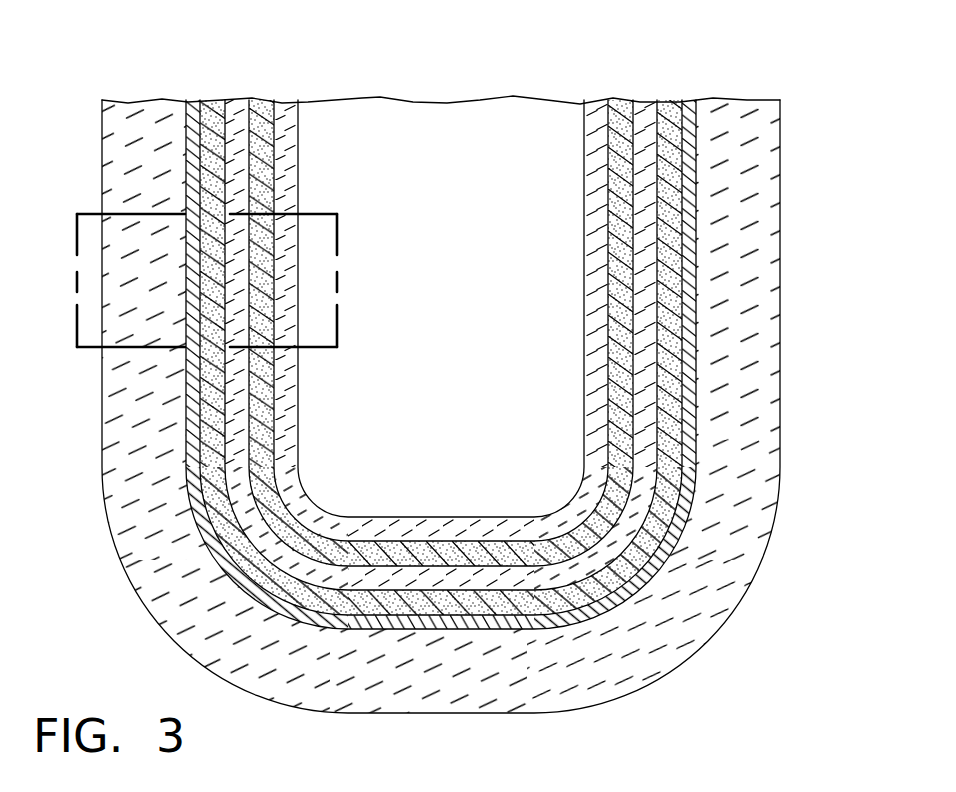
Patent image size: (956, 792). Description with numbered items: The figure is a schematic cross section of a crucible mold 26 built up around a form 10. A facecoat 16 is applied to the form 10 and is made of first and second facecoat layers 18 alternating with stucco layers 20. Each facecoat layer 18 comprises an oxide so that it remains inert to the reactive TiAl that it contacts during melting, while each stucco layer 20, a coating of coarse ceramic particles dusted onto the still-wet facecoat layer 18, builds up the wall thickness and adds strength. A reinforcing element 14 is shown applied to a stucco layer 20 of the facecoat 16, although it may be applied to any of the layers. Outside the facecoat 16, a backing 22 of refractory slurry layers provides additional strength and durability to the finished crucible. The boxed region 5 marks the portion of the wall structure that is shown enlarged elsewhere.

The enlarged region of FIG. 5 is at (313, 214).
The form 10 is at (452, 333).
The reinforcing element 14 is at (690, 518).
The facecoat 16 is at (584, 93).
The facecoat layer 18 is at (633, 238).
The stucco layer 20 is at (660, 292).
The backing 22 is at (712, 588).
The crucible mold 26 is at (792, 121).